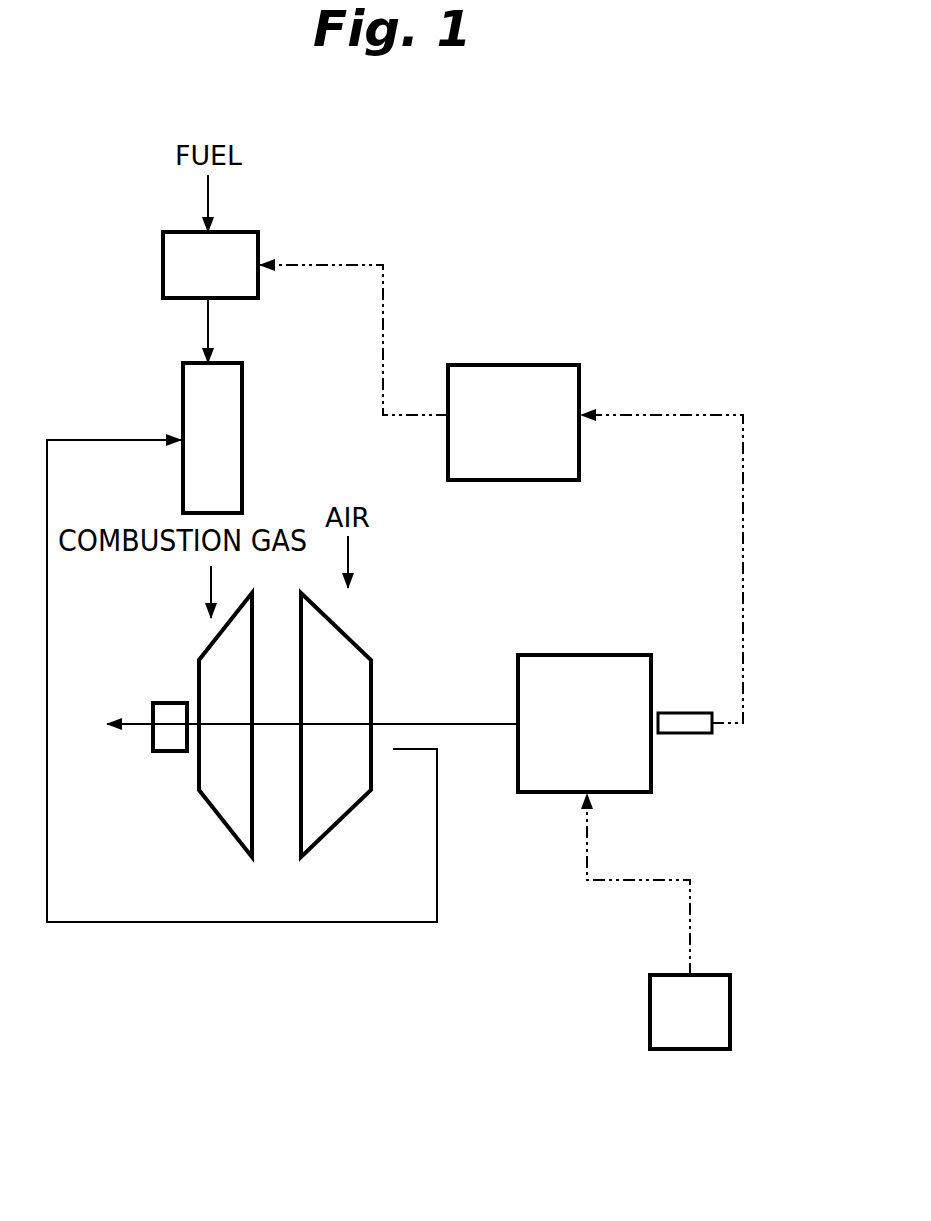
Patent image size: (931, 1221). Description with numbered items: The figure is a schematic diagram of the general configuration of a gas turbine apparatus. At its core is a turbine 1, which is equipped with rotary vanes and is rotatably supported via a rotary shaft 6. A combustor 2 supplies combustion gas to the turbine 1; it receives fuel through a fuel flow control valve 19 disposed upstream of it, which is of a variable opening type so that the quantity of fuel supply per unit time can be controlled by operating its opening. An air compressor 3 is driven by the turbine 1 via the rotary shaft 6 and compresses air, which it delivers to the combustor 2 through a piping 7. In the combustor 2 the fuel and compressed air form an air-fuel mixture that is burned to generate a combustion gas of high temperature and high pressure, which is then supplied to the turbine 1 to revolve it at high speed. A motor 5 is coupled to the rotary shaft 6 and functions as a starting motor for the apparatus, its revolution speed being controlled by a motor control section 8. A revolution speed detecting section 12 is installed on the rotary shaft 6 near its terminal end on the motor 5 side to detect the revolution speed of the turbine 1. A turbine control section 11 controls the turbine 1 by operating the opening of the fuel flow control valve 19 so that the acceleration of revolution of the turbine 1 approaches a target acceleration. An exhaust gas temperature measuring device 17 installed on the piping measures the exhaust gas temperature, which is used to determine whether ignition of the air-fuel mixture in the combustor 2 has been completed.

The turbine 1 is at (223, 822).
The combustor 2 is at (242, 413).
The air compressor 3 is at (325, 830).
The motor 5 is at (588, 655).
The rotary shaft 6 is at (456, 723).
The piping 7 is at (437, 880).
The motor control section 8 is at (650, 1013).
The turbine control section 11 is at (505, 365).
The revolution speed detecting section 12 is at (697, 735).
The exhaust gas temperature measuring device 17 is at (167, 703).
The fuel flow control valve 19 is at (163, 268).